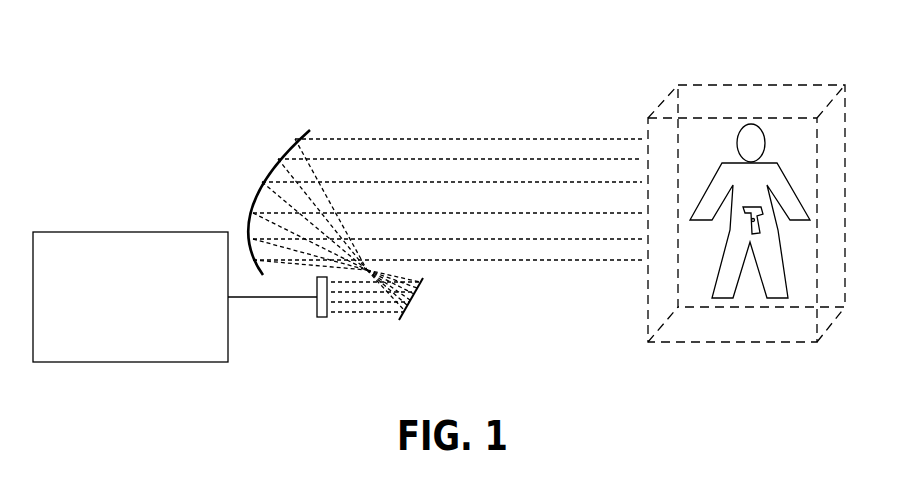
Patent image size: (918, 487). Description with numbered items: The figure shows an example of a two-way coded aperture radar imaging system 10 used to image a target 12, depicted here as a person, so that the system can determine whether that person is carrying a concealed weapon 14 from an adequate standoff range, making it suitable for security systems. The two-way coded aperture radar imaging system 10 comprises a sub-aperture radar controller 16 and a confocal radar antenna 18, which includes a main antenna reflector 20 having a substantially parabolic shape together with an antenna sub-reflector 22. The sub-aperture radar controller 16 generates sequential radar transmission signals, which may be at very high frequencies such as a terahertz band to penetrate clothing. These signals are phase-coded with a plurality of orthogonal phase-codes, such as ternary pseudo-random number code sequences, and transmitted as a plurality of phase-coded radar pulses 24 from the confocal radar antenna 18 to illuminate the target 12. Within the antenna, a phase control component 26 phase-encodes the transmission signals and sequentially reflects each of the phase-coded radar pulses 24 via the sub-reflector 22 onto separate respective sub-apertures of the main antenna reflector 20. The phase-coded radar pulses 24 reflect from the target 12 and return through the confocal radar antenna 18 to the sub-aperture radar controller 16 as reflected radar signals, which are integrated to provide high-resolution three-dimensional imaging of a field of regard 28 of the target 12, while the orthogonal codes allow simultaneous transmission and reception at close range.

The two-way coded aperture radar imaging system 10 is at (114, 36).
The target 12 is at (738, 160).
The concealed weapon 14 is at (763, 237).
The sub-aperture radar controller 16 is at (107, 232).
The confocal radar antenna 18 is at (310, 98).
The main antenna reflector 20 is at (263, 167).
The antenna sub-reflector 22 is at (414, 290).
The phase-coded radar pulses 24 is at (462, 126).
The phase control component 26 is at (322, 317).
The field of regard 28 is at (746, 105).